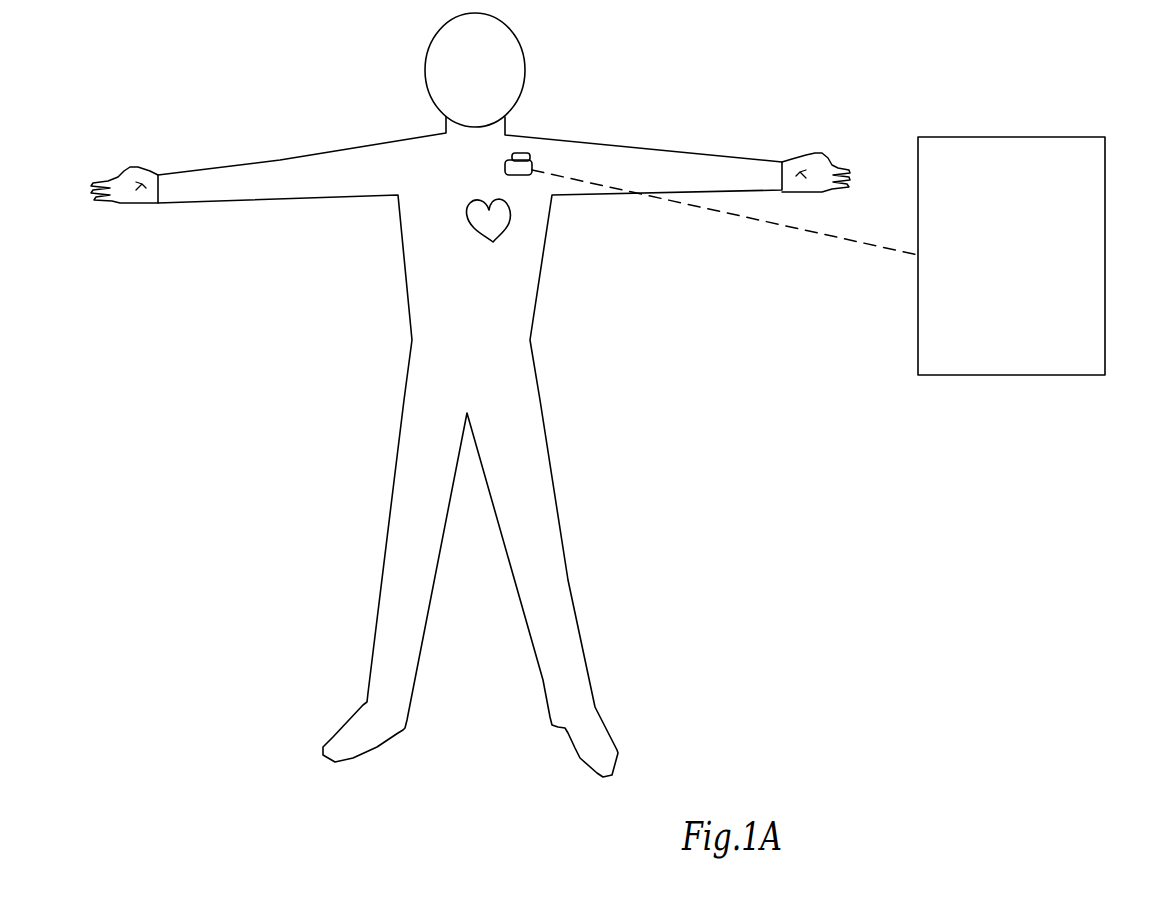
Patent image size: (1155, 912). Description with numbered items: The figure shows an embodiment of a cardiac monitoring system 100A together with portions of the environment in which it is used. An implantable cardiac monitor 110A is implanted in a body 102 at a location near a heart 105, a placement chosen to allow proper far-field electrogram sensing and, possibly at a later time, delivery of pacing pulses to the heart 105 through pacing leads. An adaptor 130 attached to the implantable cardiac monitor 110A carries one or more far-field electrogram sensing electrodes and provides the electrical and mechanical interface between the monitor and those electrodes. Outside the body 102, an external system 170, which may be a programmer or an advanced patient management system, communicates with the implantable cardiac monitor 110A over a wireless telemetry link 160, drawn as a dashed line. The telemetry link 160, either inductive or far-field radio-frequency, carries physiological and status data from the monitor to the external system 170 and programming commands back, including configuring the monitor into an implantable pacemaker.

The cardiac monitoring system 100A is at (1002, 713).
The body 102 is at (412, 305).
The heart 105 is at (476, 230).
The implantable cardiac monitor 110A is at (533, 166).
The adaptor 130 is at (510, 157).
The wireless telemetry link 160 is at (790, 228).
The external system 170 is at (1105, 187).